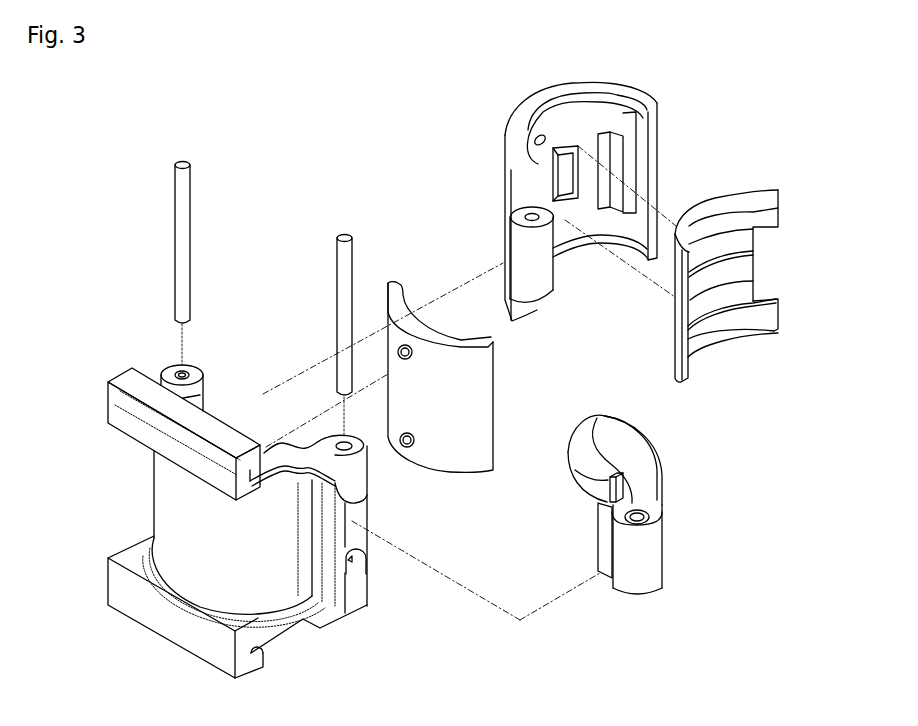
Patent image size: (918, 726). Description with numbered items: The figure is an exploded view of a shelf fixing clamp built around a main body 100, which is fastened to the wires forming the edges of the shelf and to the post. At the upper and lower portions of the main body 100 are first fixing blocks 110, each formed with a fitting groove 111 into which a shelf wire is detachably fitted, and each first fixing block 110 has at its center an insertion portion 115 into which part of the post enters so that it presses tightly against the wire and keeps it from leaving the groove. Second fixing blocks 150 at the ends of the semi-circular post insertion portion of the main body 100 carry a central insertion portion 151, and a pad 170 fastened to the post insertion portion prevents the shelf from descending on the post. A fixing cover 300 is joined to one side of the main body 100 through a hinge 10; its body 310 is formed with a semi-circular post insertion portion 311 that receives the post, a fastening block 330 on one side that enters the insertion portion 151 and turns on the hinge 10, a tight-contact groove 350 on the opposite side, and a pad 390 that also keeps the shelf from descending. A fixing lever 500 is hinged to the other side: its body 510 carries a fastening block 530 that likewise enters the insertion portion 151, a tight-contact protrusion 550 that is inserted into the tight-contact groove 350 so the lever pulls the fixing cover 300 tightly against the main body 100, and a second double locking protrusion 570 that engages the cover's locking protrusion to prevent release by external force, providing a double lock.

The hinge 10 is at (338, 291).
The main body 100 is at (250, 503).
The first fixing block 110 is at (118, 373).
The fitting groove 111 is at (268, 656).
The insertion portion 115 is at (208, 380).
The second fixing block 150 is at (370, 475).
The insertion portion 151 is at (358, 552).
The pad 170 is at (478, 385).
The fixing cover 300 is at (570, 187).
The body 310 is at (612, 95).
The post insertion portion 311 is at (597, 247).
The fastening block 330 is at (503, 246).
The tight-contact groove 350 is at (645, 152).
The pad 390 is at (752, 193).
The fixing lever 500 is at (632, 500).
The body 510 is at (668, 463).
The fastening block 530 is at (650, 545).
The tight-contact protrusion 550 is at (600, 531).
The second double locking protrusion 570 is at (603, 485).